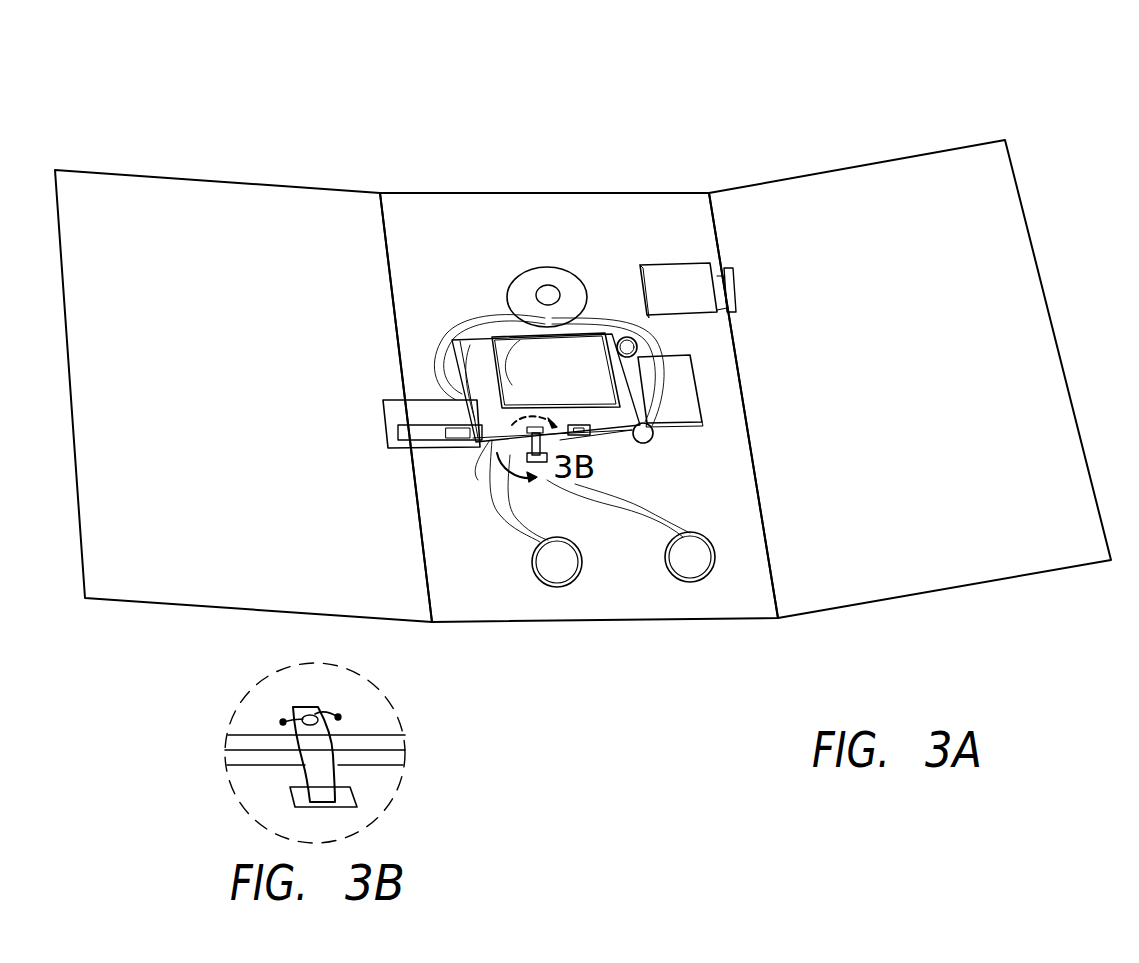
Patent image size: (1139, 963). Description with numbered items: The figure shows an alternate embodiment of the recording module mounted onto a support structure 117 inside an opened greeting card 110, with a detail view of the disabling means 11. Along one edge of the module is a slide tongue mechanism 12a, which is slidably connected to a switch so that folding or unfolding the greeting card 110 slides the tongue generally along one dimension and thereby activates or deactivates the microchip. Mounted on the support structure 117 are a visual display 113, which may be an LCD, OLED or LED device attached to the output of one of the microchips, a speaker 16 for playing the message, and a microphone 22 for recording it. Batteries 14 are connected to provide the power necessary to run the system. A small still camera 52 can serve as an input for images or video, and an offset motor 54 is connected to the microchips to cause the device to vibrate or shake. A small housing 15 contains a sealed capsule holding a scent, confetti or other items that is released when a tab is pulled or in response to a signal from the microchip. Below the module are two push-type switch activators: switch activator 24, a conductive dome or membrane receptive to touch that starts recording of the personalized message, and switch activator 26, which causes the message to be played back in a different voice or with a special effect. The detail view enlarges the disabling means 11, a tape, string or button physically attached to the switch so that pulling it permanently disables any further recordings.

In FIG. 3A, the greeting card 110 is at (828, 140).
In FIG. 3A, the support structure 117 is at (407, 263).
In FIG. 3A, the visual display 113 is at (553, 380).
In FIG. 3A, the speaker 16 is at (548, 295).
In FIG. 3A, the microphone 22 is at (625, 347).
In FIG. 3A, the batteries 14 is at (672, 377).
In FIG. 3A, the housing 15 is at (688, 273).
In FIG. 3A, the slide tongue mechanism 12a is at (433, 430).
In FIG. 3A, the disabling means 11 is at (533, 445).
In FIG. 3B, the disabling means 11 is at (313, 772).
In FIG. 3A, the switch activator 24 is at (557, 562).
In FIG. 3A, the switch activator 26 is at (690, 557).
In FIG. 3A, the still camera 52 is at (583, 428).
In FIG. 3A, the offset motor 54 is at (643, 433).